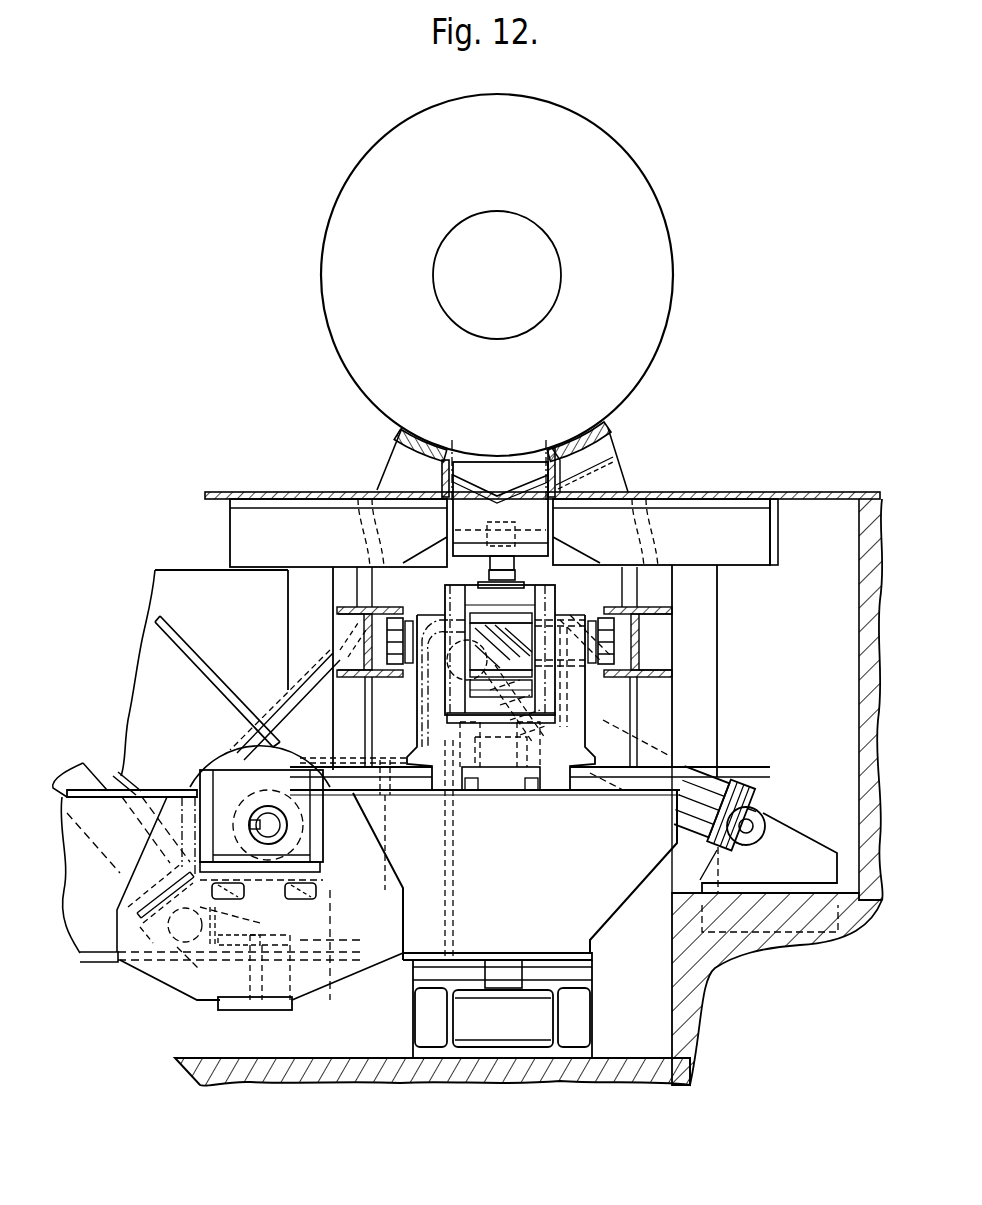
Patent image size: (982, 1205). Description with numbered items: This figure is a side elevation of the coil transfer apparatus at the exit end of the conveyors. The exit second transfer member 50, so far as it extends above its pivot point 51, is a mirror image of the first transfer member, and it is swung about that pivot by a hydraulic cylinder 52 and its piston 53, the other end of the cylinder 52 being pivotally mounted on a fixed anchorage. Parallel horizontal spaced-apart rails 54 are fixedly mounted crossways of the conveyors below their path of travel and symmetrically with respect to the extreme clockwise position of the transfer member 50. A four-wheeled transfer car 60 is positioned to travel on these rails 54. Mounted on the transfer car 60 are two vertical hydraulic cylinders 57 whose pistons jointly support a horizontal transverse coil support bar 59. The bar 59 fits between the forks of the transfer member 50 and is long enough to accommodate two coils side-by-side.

The exit second transfer member 50 is at (423, 475).
The pivot point 51 is at (260, 815).
The hydraulic cylinder 52 is at (682, 780).
The piston 53 is at (568, 704).
The rails 54 is at (352, 660).
The vertical hydraulic cylinders 57 is at (512, 641).
The coil support bar 59 is at (518, 506).
The transfer car 60 is at (567, 681).